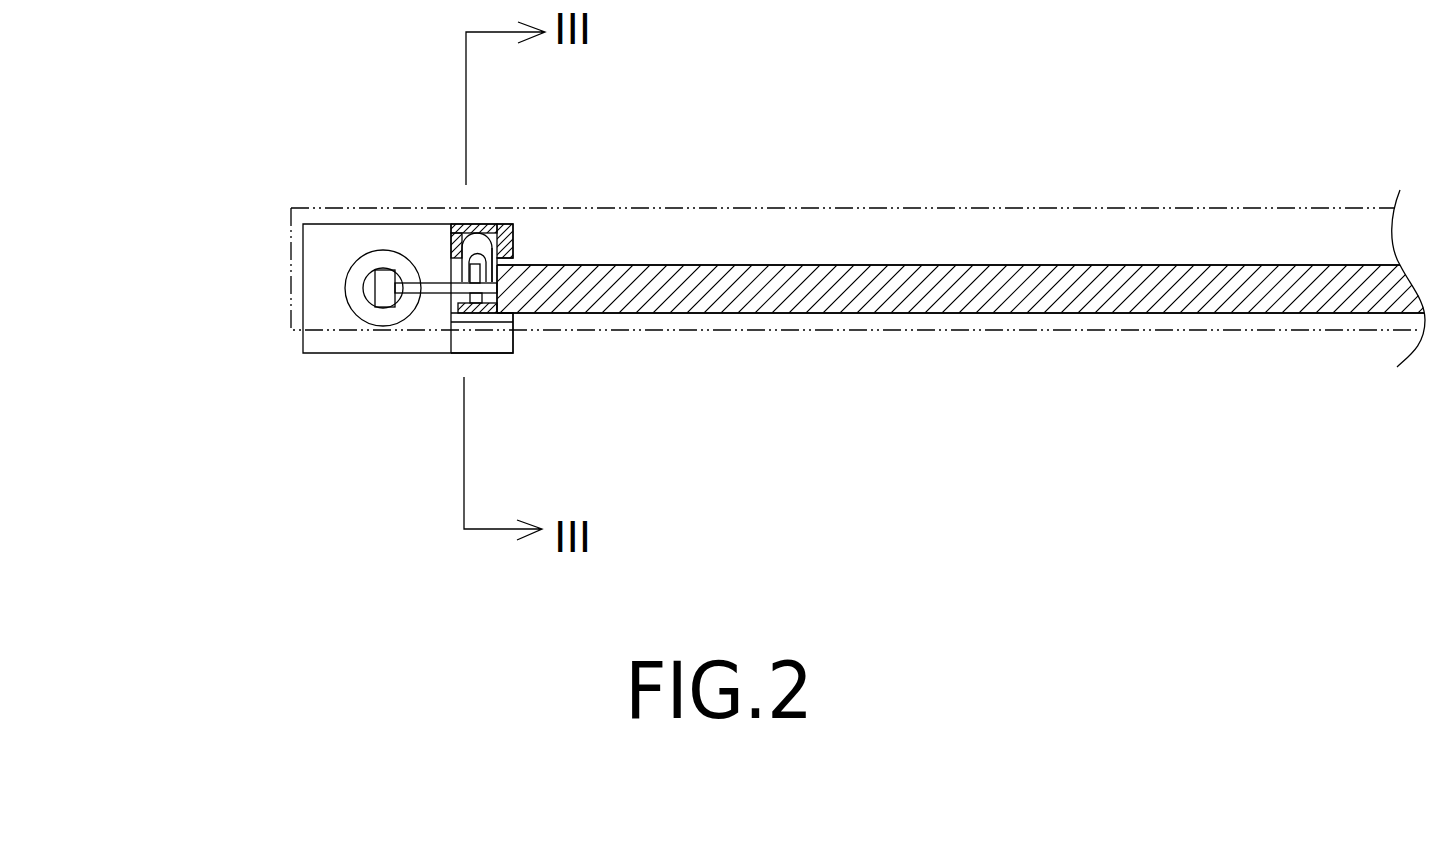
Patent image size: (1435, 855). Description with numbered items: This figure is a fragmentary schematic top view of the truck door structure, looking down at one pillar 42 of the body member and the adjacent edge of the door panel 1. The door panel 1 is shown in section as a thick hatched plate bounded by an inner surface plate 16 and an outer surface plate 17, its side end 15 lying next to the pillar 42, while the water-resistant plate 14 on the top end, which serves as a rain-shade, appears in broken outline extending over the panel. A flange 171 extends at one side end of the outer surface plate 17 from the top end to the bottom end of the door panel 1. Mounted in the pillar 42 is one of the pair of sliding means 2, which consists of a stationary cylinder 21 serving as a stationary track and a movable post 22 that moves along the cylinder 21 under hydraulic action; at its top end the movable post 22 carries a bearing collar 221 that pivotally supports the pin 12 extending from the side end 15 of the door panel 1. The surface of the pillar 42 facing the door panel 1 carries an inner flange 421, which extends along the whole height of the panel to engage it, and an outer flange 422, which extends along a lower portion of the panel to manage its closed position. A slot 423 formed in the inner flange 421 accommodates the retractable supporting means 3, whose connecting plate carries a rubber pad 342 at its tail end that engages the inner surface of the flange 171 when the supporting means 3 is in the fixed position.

The door panel 1 is at (1062, 286).
The pin 12 is at (433, 290).
The water-resistant plate 14 is at (948, 208).
The side end 15 is at (495, 300).
The inner surface plate 16 is at (778, 265).
The outer surface plate 17 is at (850, 313).
The flange 171 is at (475, 310).
The sliding means 2 is at (342, 284).
The stationary cylinder 21 is at (355, 262).
The movable post 22 is at (383, 270).
The bearing collar 221 is at (370, 298).
The retractable supporting means 3 is at (472, 250).
The rubber pad 342 is at (482, 277).
The pillar 42 is at (362, 353).
The inner flange 421 is at (501, 233).
The outer flange 422 is at (513, 342).
The slot 423 is at (495, 247).